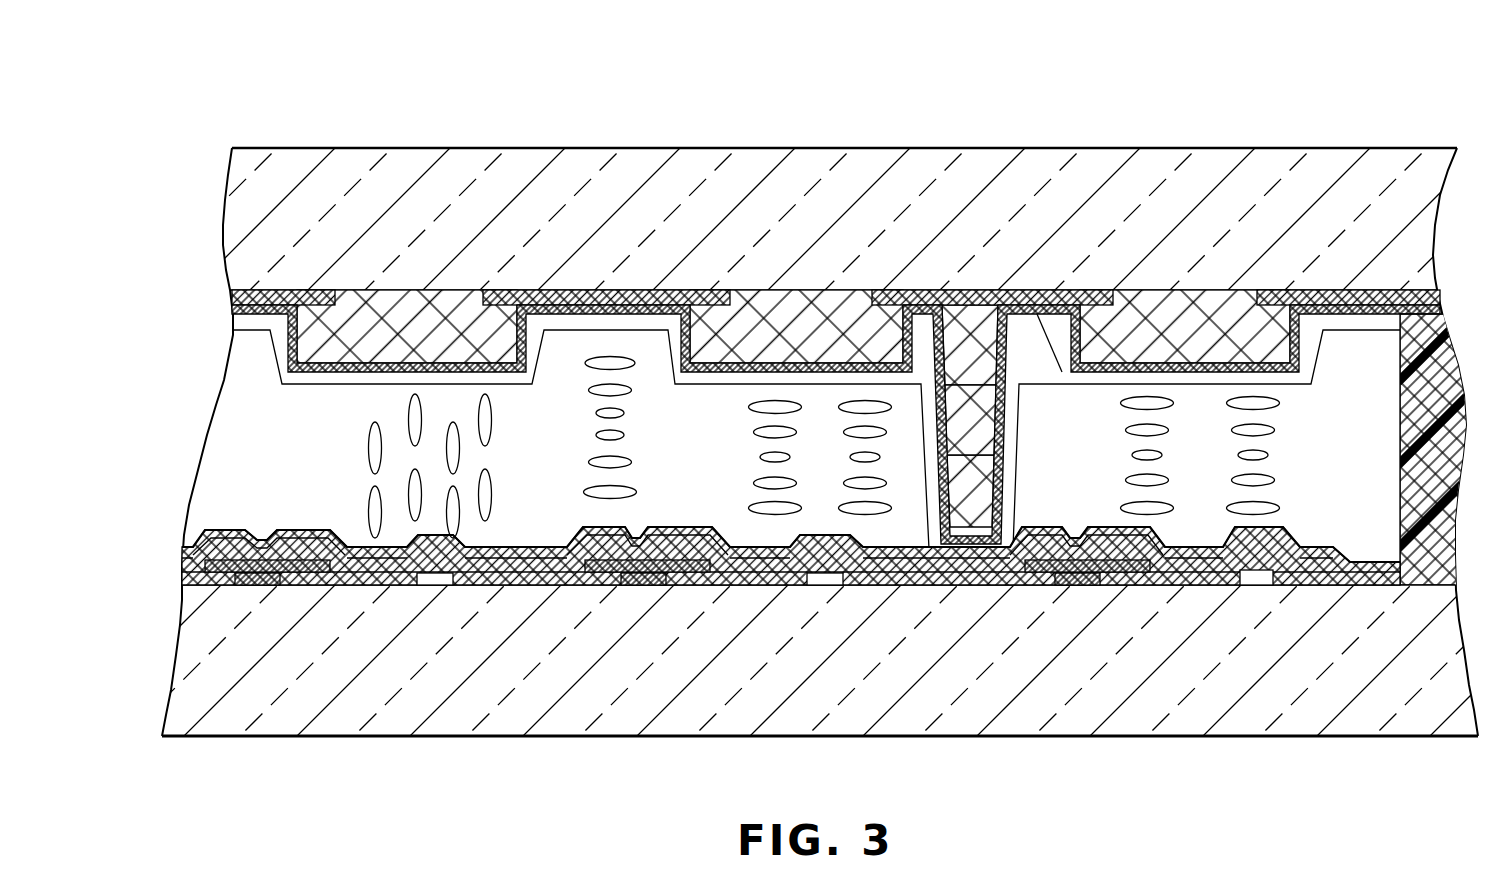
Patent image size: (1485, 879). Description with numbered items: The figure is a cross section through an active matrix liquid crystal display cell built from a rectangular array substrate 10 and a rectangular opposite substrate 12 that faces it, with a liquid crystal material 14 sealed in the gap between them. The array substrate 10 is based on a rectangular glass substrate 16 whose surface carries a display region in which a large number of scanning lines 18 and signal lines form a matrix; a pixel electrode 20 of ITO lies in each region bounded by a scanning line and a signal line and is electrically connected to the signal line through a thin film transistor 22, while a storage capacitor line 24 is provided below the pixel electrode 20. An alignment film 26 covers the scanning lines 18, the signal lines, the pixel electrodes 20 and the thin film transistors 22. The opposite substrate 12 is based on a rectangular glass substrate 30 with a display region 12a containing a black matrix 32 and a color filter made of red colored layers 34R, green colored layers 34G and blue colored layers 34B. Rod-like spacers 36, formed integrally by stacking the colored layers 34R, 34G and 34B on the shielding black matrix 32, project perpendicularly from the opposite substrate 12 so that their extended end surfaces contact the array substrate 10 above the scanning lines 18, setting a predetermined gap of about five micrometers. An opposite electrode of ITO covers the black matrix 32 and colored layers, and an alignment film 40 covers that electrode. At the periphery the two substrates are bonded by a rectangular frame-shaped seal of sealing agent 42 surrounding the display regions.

The array substrate 10 is at (545, 762).
The opposite substrate 12 is at (800, 291).
The display region 12a is at (739, 278).
The liquid crystal material 14 is at (212, 430).
The glass substrate 16 is at (1283, 720).
The scanning lines 18 is at (262, 587).
The pixel electrode 20 is at (483, 572).
The thin film transistor 22 is at (225, 610).
The storage capacitor line 24 is at (428, 586).
The alignment film 26 is at (520, 547).
The glass substrate 30 is at (1278, 160).
The black matrix 32 is at (617, 298).
The blue colored layers 34B is at (330, 357).
The green colored layers 34G is at (983, 424).
The red colored layers 34R is at (985, 373).
The rod-like spacers 36 is at (965, 318).
The alignment film 40 is at (1315, 360).
The sealing agent 42 is at (1405, 458).